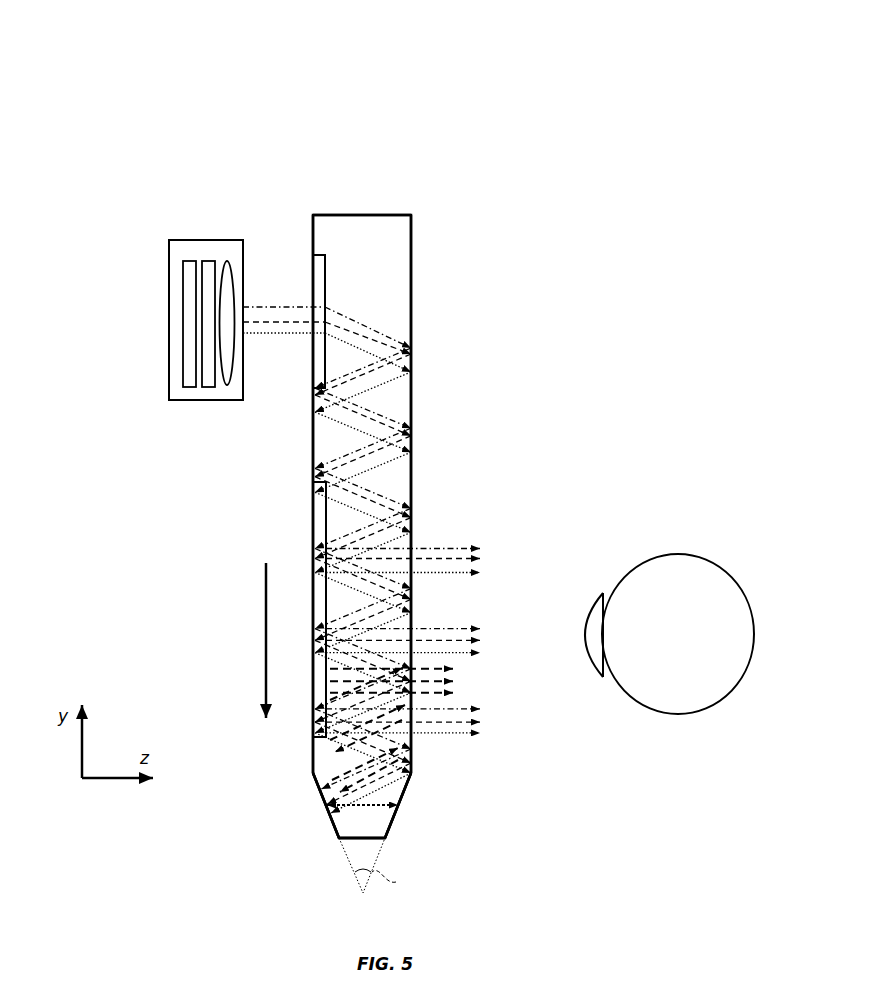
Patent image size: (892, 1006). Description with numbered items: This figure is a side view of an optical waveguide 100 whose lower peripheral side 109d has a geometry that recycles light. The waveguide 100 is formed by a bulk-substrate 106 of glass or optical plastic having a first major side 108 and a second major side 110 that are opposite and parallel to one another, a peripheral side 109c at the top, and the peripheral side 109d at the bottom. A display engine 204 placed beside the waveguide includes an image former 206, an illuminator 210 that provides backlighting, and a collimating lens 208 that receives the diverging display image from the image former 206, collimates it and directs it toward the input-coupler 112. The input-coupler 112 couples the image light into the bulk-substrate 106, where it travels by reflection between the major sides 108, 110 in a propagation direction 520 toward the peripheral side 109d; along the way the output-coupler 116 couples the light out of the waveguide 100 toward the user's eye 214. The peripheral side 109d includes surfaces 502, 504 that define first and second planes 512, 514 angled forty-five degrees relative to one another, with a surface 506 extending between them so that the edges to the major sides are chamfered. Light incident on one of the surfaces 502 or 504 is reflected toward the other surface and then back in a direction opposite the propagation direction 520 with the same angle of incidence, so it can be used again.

The optical waveguide 100 is at (392, 80).
The bulk-substrate 106 is at (373, 246).
The first major side 108 is at (411, 243).
The peripheral side 109c is at (367, 214).
The peripheral side 109d is at (415, 858).
The second major side 110 is at (312, 223).
The input-coupler 112 is at (312, 265).
The output-coupler 116 is at (312, 698).
The display engine 204 is at (208, 240).
The image former 206 is at (209, 388).
The collimating lens 208 is at (228, 388).
The illuminator 210 is at (190, 388).
The eye of user 214 is at (700, 583).
The surface 502 is at (444, 807).
The surface 504 is at (288, 807).
The surface 506 is at (360, 841).
The first plane 512 is at (400, 805).
The second plane 514 is at (325, 805).
The propagation direction 520 is at (265, 612).